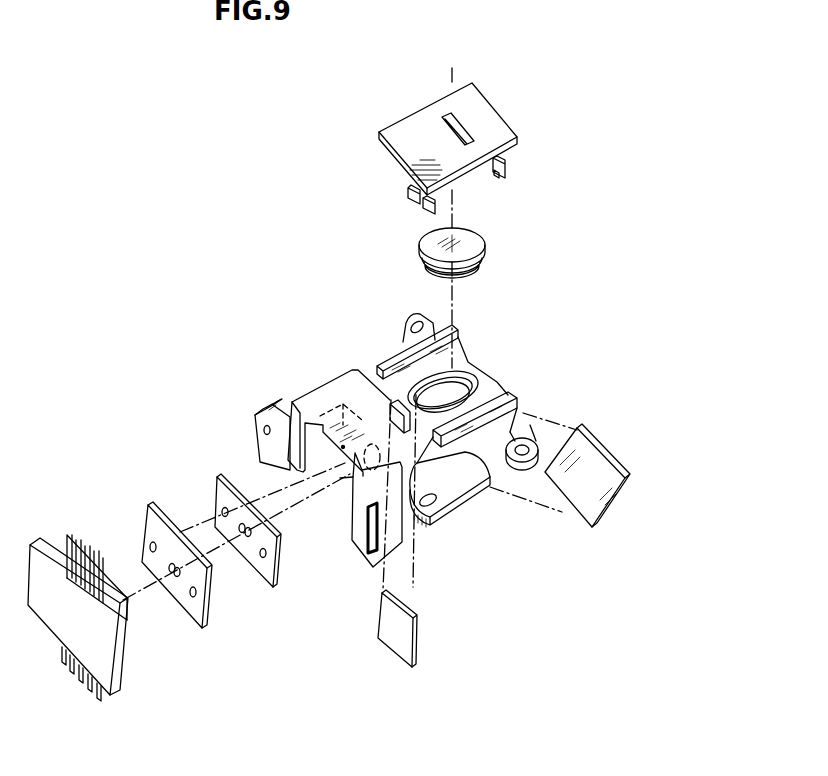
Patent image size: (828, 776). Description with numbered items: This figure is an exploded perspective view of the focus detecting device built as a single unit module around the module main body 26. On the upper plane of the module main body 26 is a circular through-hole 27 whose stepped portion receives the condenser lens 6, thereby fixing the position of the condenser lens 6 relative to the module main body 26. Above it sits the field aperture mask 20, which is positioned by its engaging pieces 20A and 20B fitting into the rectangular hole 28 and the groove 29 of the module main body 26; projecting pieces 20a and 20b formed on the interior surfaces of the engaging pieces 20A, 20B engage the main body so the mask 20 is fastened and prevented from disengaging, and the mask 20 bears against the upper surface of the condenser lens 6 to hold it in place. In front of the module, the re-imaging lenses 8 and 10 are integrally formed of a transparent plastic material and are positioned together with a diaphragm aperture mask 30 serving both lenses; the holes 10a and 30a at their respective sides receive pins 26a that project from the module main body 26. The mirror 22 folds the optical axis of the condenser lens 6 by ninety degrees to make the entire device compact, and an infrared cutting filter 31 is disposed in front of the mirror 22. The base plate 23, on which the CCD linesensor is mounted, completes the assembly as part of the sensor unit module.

The condenser lens 6 is at (486, 253).
The re-imaging lens 8 is at (177, 576).
The re-imaging lens 10 is at (170, 573).
The hole 10a is at (148, 545).
The field aperture mask 20 is at (397, 124).
The engaging piece 20A is at (411, 195).
The projecting piece 20a is at (434, 200).
The engaging piece 20B is at (506, 168).
The projecting piece 20b is at (496, 176).
The mirror 22 is at (572, 495).
The base plate 23 is at (38, 540).
The module main body 26 is at (322, 392).
The pin 26a is at (343, 447).
The circular through-hole 27 is at (403, 322).
The rectangular hole 28 is at (370, 377).
The groove 29 is at (477, 377).
The diaphragm aperture mask 30 is at (220, 470).
The hole 30a is at (224, 507).
The infrared cutting filter 31 is at (408, 662).